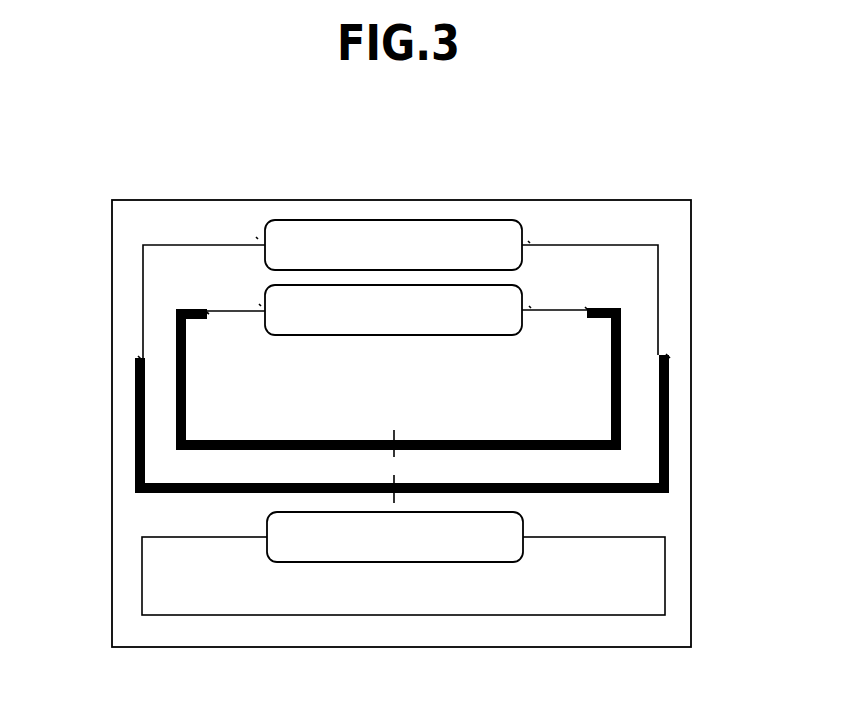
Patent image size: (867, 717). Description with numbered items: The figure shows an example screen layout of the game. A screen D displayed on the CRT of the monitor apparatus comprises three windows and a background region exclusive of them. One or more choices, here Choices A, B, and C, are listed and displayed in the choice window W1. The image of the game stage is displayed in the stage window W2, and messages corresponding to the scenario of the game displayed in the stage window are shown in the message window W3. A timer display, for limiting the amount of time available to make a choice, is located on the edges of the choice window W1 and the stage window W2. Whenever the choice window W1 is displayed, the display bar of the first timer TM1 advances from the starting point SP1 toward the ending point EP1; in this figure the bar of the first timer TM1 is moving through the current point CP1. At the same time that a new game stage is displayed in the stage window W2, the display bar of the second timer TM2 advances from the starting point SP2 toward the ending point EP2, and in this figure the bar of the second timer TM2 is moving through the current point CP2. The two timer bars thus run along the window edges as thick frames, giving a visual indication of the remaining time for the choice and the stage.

The screen D is at (667, 196).
The choice window W1 is at (557, 309).
The stage window W2 is at (580, 244).
The message window W3 is at (497, 615).
The first timer TM1 is at (622, 340).
The second timer TM2 is at (670, 400).
The starting point SP1 is at (395, 455).
The starting point SP2 is at (395, 497).
The ending point EP1 is at (528, 242).
The ending point EP2 is at (530, 307).
The current point CP1 is at (207, 312).
The current point CP2 is at (142, 358).